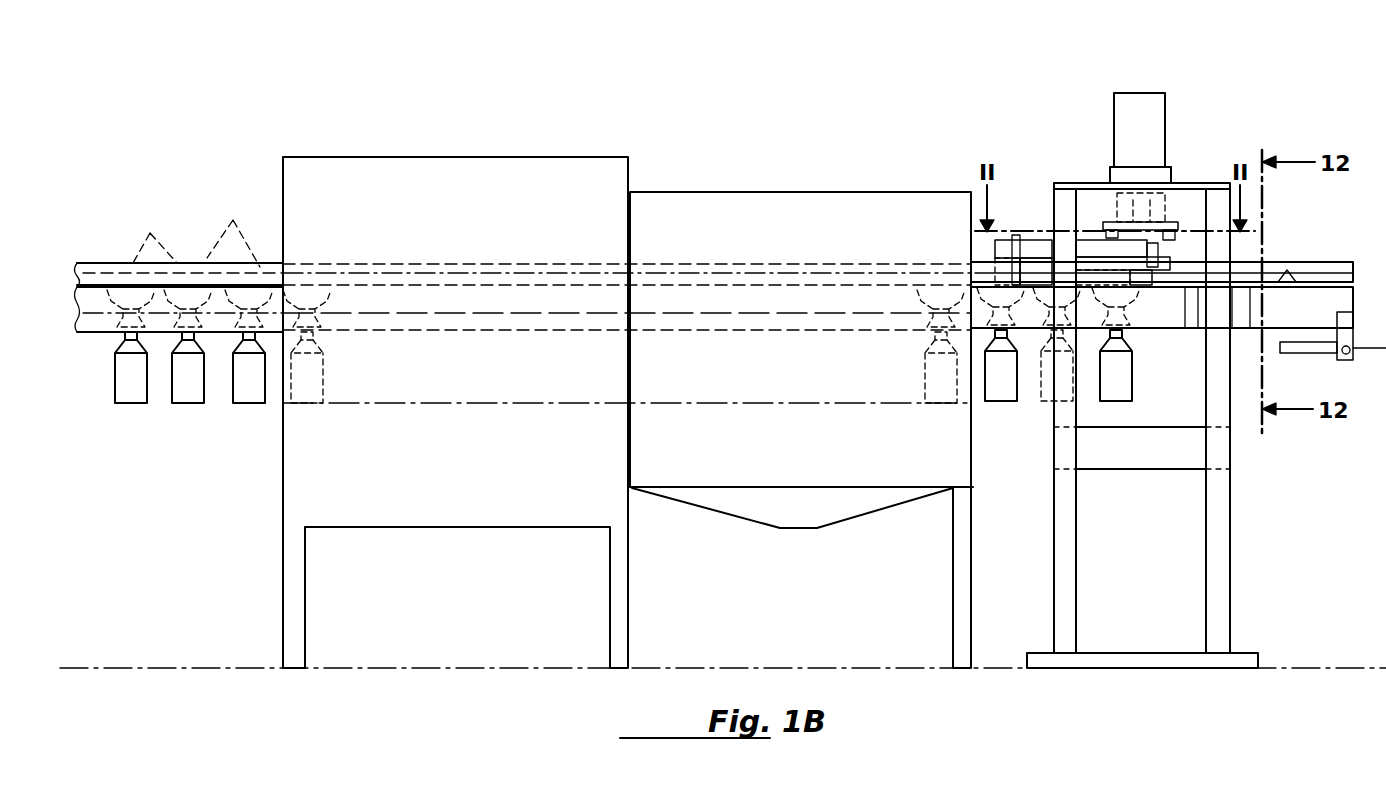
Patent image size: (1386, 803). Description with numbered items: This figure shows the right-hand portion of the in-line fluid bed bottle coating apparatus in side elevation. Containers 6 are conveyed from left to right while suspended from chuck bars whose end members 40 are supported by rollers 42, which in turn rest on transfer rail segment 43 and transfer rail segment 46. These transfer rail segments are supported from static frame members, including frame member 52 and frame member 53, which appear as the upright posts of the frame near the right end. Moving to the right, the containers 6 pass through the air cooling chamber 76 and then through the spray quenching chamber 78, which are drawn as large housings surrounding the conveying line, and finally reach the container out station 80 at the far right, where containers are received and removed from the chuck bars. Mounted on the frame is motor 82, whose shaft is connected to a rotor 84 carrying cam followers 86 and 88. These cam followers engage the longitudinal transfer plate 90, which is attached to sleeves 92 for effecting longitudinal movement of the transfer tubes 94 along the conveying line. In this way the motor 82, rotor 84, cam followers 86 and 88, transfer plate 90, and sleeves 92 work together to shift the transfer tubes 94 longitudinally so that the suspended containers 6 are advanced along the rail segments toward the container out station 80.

The containers 6 is at (183, 398).
The end members 40 is at (159, 264).
The rollers 42 is at (269, 257).
The transfer rail segment 43 is at (100, 320).
The transfer rail segment 46 is at (1287, 300).
The frame member 52 is at (1062, 192).
The frame member 53 is at (1215, 192).
The air cooling chamber 76 is at (415, 175).
The spray quenching chamber 78 is at (738, 205).
The container out station 80 is at (1331, 356).
The motor 82 is at (1128, 112).
The drive mechanism 84 is at (1168, 228).
The cam follower 86 is at (1112, 230).
The cam follower 88 is at (1172, 238).
The longitudinal transfer plate 90 is at (1030, 248).
The sleeves 92 is at (1000, 250).
The transfer tubes 94 is at (90, 258).